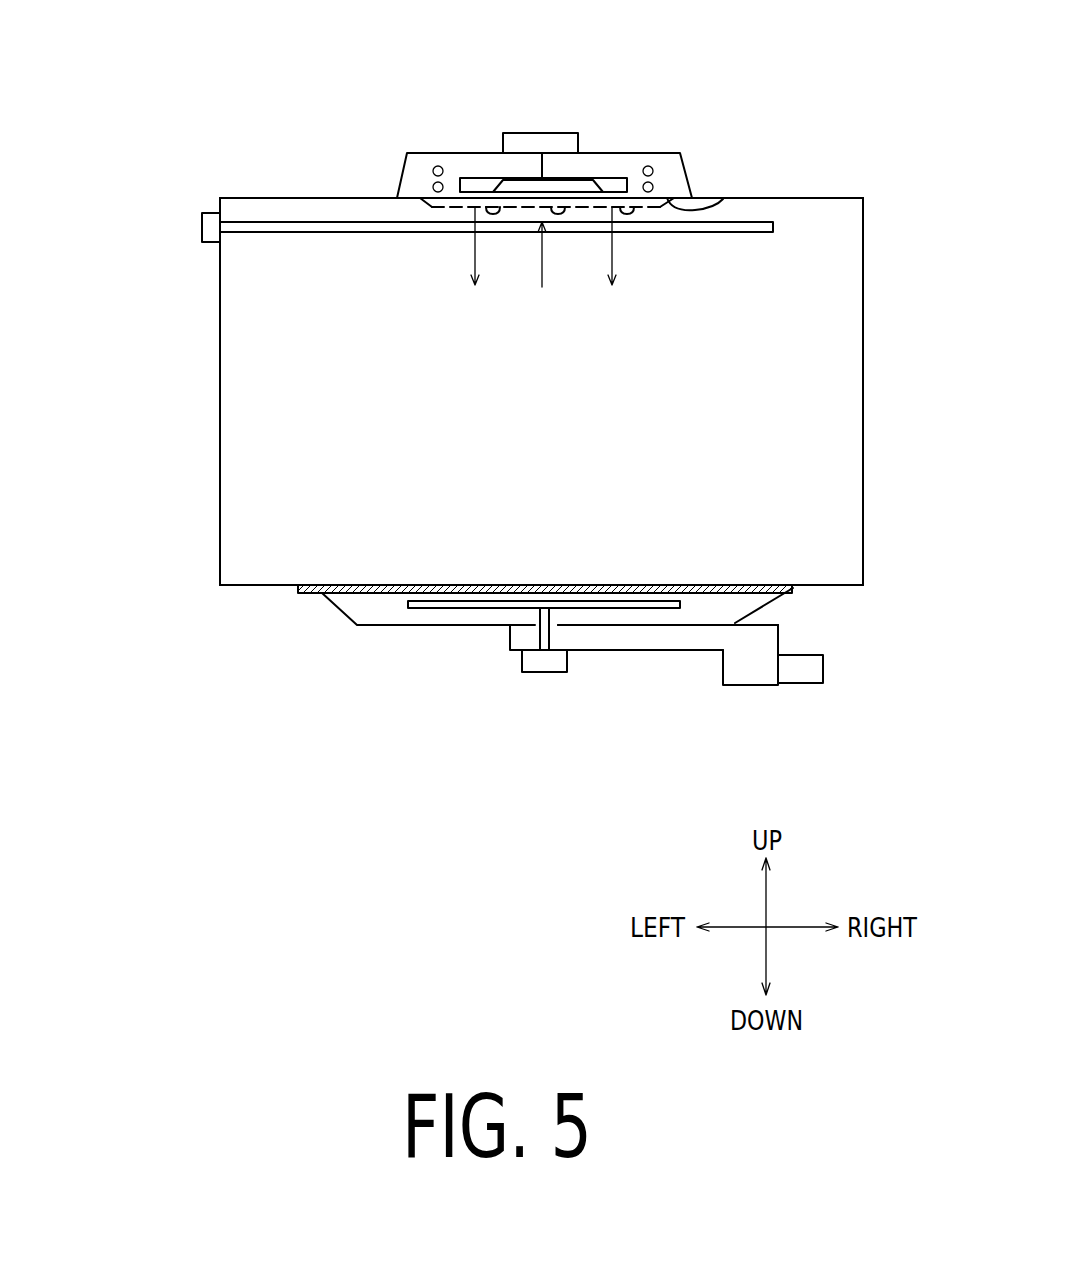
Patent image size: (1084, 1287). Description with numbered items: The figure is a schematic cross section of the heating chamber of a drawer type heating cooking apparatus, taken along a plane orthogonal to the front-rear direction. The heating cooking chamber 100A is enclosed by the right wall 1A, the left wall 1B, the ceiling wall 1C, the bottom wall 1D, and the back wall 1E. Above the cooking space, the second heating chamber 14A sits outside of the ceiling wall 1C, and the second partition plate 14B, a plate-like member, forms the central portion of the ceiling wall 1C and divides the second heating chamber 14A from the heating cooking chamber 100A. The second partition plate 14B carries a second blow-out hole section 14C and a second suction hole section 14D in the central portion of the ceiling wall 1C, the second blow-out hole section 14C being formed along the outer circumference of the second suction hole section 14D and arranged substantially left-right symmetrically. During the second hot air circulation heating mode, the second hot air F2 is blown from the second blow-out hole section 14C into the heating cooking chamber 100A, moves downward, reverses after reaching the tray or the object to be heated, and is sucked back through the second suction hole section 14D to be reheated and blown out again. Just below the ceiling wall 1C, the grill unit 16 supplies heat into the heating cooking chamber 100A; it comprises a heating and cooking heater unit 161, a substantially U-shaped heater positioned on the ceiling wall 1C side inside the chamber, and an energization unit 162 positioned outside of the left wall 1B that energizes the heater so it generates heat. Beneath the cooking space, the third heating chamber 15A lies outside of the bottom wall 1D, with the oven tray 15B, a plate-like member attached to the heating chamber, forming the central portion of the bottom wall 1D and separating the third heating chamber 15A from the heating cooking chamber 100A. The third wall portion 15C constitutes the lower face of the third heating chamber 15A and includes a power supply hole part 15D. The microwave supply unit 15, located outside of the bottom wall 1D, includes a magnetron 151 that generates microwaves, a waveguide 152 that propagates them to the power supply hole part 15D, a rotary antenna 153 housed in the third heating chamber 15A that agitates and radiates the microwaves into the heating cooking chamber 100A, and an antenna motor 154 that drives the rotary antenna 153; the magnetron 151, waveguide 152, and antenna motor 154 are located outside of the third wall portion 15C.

The heating cooking chamber 100A is at (842, 304).
The right wall 1A is at (858, 424).
The left wall 1B is at (222, 430).
The ceiling wall 1C is at (293, 198).
The bottom wall 1D is at (253, 590).
The back wall 1E is at (843, 366).
The second heating chamber 14A is at (412, 172).
The second partition plate 14B is at (723, 200).
The second blow-out hole section 14C is at (505, 207).
The second suction hole section 14D is at (568, 207).
The grill unit 16 is at (414, 244).
The heating and cooking heater unit 161 is at (282, 233).
The energization unit 162 is at (202, 228).
The second hot air F2 is at (474, 262).
The microwave supply unit 15 is at (614, 653).
The third heating chamber 15A is at (733, 610).
The oven tray 15B is at (390, 590).
The third wall portion 15C is at (388, 625).
The power supply hole part 15D is at (535, 623).
The magnetron 151 is at (748, 678).
The waveguide 152 is at (663, 647).
The rotary antenna 153 is at (600, 610).
The antenna motor 154 is at (547, 672).